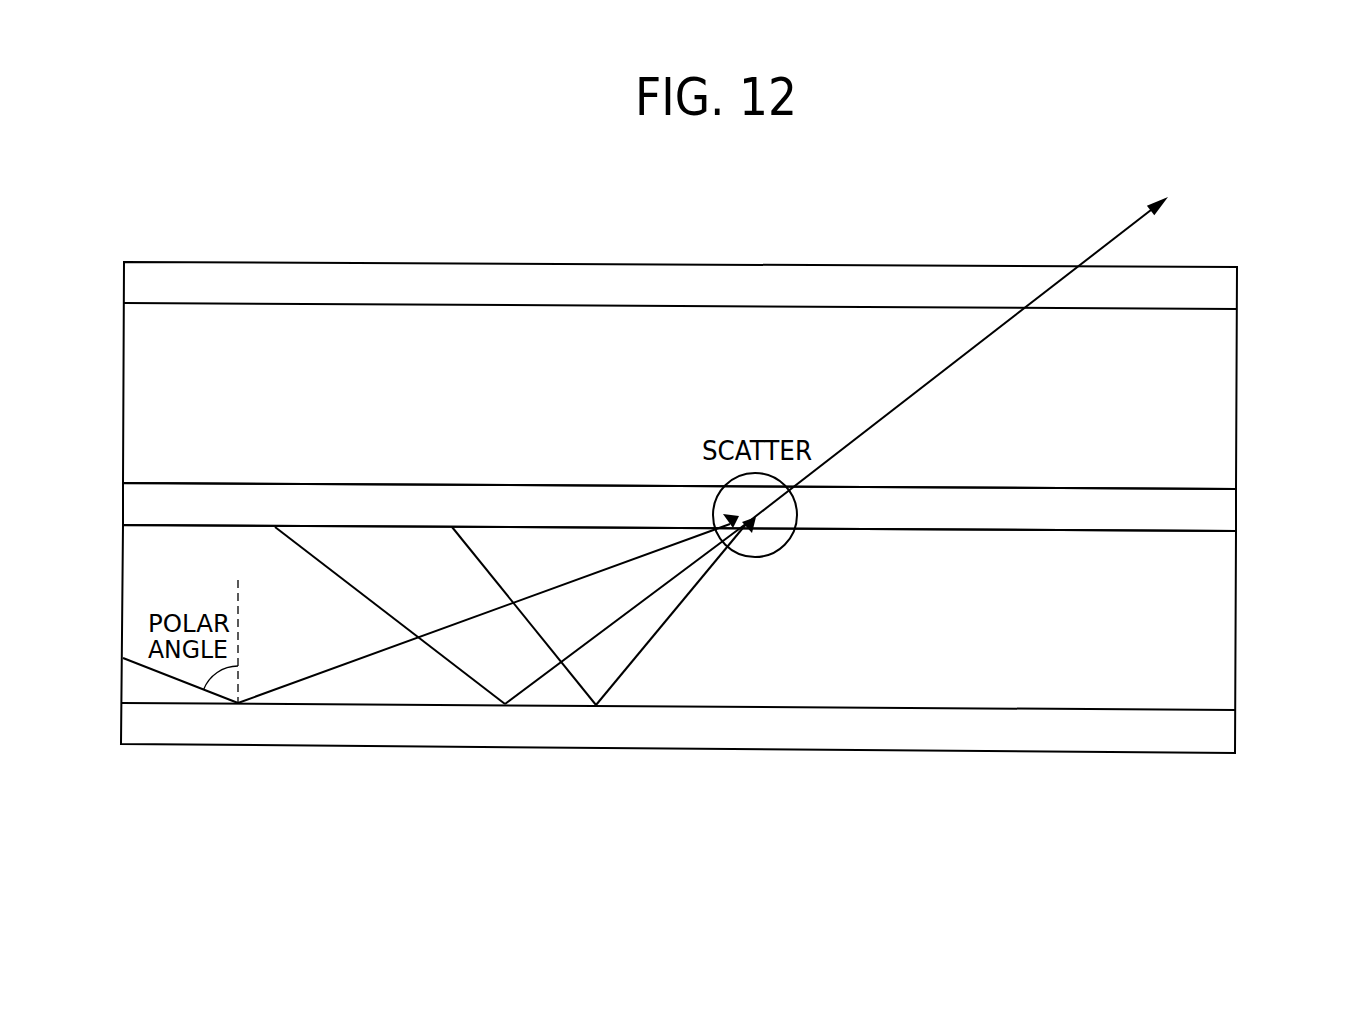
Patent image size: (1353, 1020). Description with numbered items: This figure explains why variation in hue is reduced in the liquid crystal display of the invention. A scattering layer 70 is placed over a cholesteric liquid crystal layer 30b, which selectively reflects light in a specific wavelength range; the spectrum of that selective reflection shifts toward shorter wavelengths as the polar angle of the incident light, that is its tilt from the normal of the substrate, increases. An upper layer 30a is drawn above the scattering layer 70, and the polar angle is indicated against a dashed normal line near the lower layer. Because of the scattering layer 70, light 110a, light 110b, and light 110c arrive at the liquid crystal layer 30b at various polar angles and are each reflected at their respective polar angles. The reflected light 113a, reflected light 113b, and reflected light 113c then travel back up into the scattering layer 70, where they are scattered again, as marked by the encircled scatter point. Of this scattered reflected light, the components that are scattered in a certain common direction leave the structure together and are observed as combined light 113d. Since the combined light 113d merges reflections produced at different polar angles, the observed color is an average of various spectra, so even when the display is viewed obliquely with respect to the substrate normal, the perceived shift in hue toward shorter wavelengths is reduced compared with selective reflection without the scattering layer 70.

The upper substrate 30a is at (1212, 412).
The liquid crystal layer 30b is at (1212, 628).
The scattering layer 70 is at (1212, 508).
The light 110a is at (168, 677).
The light 110b is at (448, 665).
The light 110c is at (573, 683).
The reflected light 113a is at (288, 683).
The reflected light 113b is at (608, 632).
The reflected light 113c is at (673, 618).
The combined light 113d is at (1112, 240).